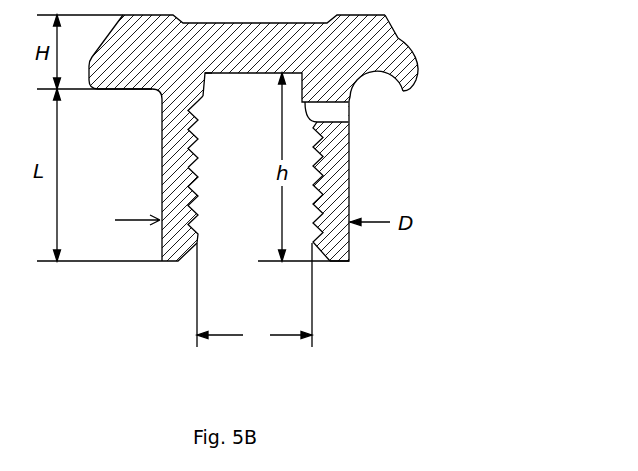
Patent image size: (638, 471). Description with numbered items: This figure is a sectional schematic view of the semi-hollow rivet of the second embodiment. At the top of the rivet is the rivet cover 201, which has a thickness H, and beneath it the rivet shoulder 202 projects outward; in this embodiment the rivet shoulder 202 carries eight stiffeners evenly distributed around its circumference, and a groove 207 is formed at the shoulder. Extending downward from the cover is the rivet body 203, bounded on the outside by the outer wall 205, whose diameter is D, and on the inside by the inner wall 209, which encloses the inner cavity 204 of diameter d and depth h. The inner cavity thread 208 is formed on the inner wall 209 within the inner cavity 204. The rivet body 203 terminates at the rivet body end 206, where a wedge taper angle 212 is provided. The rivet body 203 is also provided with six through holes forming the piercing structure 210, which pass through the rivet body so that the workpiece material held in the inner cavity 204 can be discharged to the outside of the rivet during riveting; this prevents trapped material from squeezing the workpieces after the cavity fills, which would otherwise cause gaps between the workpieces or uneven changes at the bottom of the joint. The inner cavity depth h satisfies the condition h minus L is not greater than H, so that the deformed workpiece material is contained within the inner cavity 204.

The rivet cover 201 is at (142, 30).
The rivet shoulder 202 is at (407, 62).
The rivet body 203 is at (168, 168).
The inner cavity 204 is at (252, 213).
The outer wall 205 is at (160, 133).
The rivet body end 206 is at (335, 257).
The groove 207 is at (378, 82).
The inner cavity thread 208 is at (190, 190).
The inner wall 209 is at (207, 83).
The piercing structure 210 is at (340, 178).
The wedge taper angle 212 is at (172, 262).